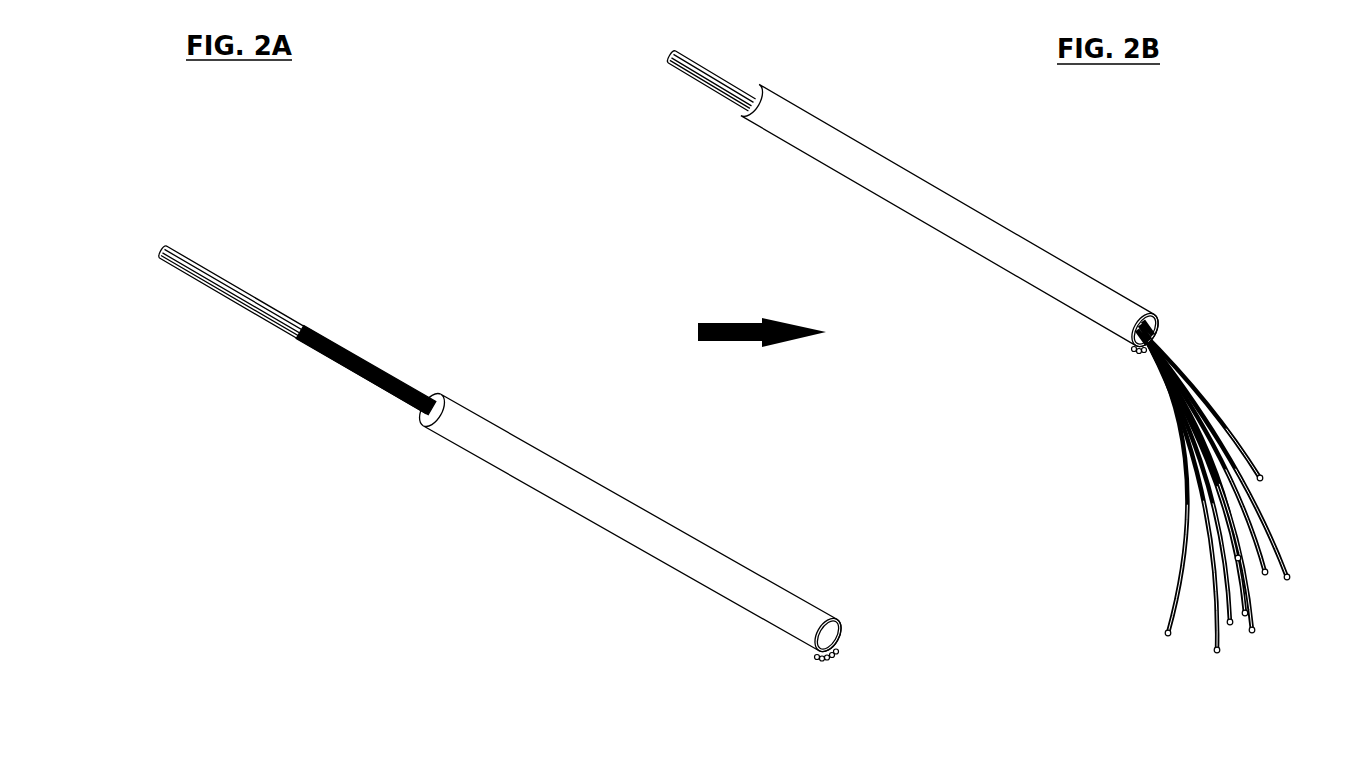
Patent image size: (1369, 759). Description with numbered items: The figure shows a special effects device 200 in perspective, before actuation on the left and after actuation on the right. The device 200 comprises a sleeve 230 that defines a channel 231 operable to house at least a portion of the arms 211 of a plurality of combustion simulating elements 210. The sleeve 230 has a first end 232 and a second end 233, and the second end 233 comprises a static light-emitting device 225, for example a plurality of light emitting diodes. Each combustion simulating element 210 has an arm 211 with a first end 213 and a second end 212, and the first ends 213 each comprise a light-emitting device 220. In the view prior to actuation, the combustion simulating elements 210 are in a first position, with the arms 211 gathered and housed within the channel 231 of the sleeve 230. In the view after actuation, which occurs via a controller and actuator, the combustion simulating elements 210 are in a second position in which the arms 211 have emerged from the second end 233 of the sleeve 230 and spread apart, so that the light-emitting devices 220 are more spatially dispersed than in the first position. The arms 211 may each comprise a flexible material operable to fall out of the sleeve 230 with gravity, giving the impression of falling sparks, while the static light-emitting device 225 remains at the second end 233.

In FIG. 2A, the special effects device 200 is at (296, 172).
In FIG. 2B, the special effects device 200 is at (1103, 161).
In FIG. 2A, the combustion simulating elements 210 is at (337, 260).
In FIG. 2B, the combustion simulating elements 210 is at (1260, 345).
In FIG. 2A, the arm 211 is at (387, 368).
In FIG. 2B, the arm 211 is at (1163, 377).
In FIG. 2B, the second end 212 is at (1177, 604).
In FIG. 2A, the first end 213 is at (181, 268).
In FIG. 2B, the light-emitting device 220 is at (1165, 637).
In FIG. 2A, the static light-emitting device 225 is at (817, 658).
In FIG. 2A, the sleeve 230 is at (638, 504).
In FIG. 2B, the sleeve 230 is at (1144, 331).
In FIG. 2A, the channel 231 is at (850, 647).
In FIG. 2A, the first end 232 is at (452, 391).
In FIG. 2A, the second end 233 is at (826, 609).